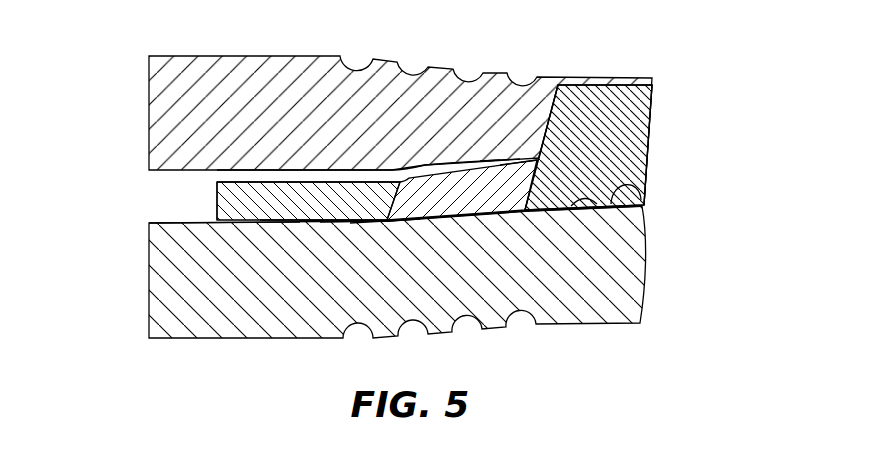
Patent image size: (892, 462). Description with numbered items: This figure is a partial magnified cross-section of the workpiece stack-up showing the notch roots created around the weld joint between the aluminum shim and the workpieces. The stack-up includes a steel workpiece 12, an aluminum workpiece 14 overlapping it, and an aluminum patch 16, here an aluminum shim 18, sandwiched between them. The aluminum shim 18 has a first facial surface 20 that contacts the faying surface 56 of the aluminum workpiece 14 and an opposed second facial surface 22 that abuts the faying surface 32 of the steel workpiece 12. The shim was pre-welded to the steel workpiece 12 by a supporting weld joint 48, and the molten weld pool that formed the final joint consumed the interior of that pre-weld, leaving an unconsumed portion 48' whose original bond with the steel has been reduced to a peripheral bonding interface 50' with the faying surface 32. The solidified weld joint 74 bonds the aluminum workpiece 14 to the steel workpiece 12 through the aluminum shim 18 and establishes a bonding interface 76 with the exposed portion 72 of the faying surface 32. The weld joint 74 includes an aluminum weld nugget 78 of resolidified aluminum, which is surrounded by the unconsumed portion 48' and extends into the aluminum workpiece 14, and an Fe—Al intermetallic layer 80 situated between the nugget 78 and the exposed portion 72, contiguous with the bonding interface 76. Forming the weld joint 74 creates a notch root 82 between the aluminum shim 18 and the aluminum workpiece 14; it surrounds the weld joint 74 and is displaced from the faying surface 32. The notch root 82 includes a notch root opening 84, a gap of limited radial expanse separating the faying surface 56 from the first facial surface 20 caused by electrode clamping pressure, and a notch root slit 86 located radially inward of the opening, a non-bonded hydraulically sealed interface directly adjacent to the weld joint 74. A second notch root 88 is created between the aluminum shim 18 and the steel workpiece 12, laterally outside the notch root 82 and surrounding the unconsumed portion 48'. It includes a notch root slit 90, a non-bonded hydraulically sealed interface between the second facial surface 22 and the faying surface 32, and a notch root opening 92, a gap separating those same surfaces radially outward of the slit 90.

The steel workpiece 12 is at (162, 275).
The aluminum workpiece 14 is at (162, 122).
The aluminum patch 16 is at (214, 188).
The aluminum shim 18 is at (225, 203).
The first facial surface 20 is at (241, 181).
The second facial surface 22 is at (237, 224).
The faying surface 32 is at (297, 220).
The supporting weld joint 48 is at (518, 95).
The unconsumed portion 48' is at (448, 95).
The peripheral bonding interface 50' is at (470, 216).
The faying surface 56 is at (290, 177).
The exposed portion 72 is at (641, 248).
The weld joint 74 is at (655, 116).
The bonding interface 76 is at (641, 198).
The aluminum weld nugget 78 is at (617, 150).
The Fe—Al intermetallic layer 80 is at (630, 182).
The notch root 82 is at (418, 163).
The notch root opening 84 is at (497, 156).
The notch root slit 86 is at (539, 157).
The notch root 88 is at (338, 233).
The notch root slit 90 is at (373, 222).
The notch root opening 92 is at (348, 221).